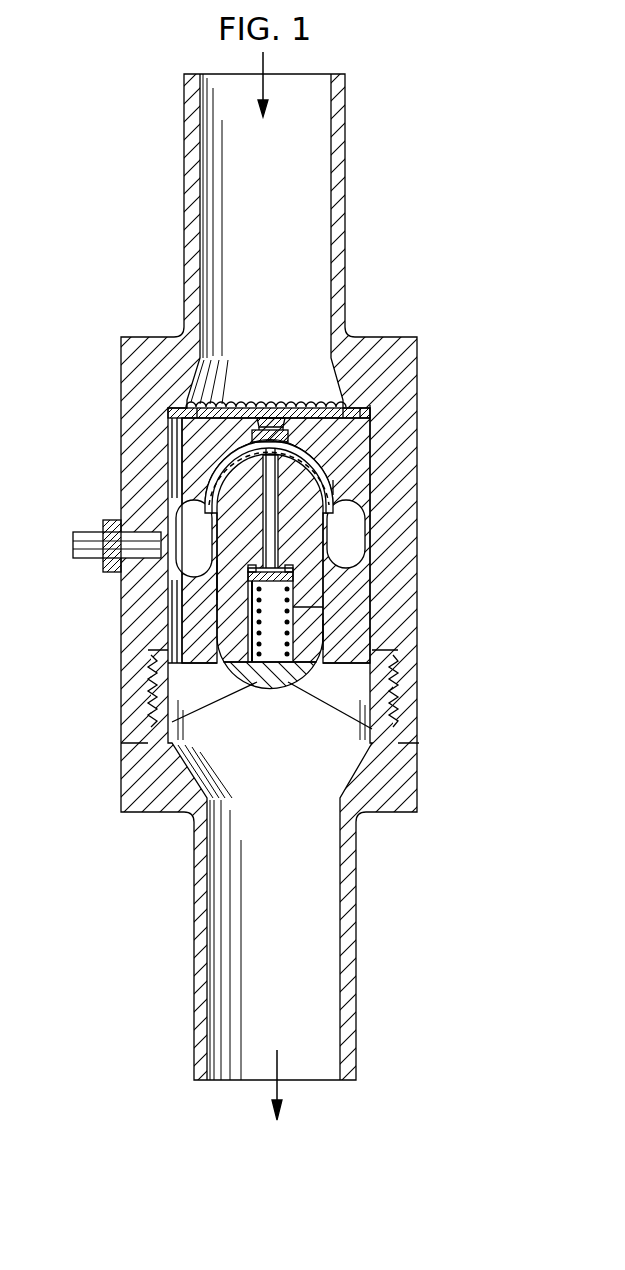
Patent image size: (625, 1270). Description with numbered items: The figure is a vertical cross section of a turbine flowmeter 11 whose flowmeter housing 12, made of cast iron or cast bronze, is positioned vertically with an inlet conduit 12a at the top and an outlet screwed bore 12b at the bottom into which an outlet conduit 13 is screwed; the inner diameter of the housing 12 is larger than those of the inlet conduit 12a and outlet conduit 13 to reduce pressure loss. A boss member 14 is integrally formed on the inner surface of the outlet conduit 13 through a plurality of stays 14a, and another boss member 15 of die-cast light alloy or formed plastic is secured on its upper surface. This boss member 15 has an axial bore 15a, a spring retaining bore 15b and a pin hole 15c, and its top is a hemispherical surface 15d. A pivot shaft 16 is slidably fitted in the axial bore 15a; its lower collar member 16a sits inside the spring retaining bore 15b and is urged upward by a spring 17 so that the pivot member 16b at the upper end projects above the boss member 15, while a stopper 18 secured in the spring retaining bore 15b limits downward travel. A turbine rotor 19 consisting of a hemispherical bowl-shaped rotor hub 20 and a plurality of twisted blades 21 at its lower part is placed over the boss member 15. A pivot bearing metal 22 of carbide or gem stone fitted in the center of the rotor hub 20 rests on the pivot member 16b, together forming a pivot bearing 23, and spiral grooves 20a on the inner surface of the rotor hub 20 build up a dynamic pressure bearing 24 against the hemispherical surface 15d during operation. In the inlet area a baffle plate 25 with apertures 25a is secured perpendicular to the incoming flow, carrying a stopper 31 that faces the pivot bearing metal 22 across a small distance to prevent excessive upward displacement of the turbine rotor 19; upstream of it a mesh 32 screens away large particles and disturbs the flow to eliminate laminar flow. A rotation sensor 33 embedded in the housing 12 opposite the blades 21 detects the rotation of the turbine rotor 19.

The turbine flowmeter 11 is at (383, 89).
The flowmeter housing 12 is at (368, 338).
The inlet conduit 12a is at (338, 130).
The outlet screwed bore 12b is at (397, 690).
The outlet conduit 13 is at (352, 892).
The boss member 14 is at (282, 688).
The stays 14a is at (218, 698).
The boss member 15 is at (216, 618).
The axial bore 15a is at (216, 570).
The spring retaining bore 15b is at (326, 637).
The pin hole 15c is at (318, 607).
The hemispherical surface 15d is at (320, 466).
The pivot shaft 16 is at (220, 524).
The collar member 16a is at (316, 580).
The pivot member 16b is at (195, 478).
The spring 17 is at (263, 688).
The stopper 18 is at (226, 630).
The turbine rotor 19 is at (338, 483).
The rotor hub 20 is at (331, 494).
The spiral grooves 20a is at (326, 458).
The blades 21 is at (357, 532).
The pivot bearing metal 22 is at (250, 438).
The pivot bearing 23 is at (250, 427).
The dynamic pressure bearing 24 is at (345, 420).
The baffle plate 25 is at (178, 408).
The apertures 25a is at (330, 408).
The stopper 31 is at (289, 421).
The mesh 32 is at (256, 402).
The rotation sensor 33 is at (73, 540).